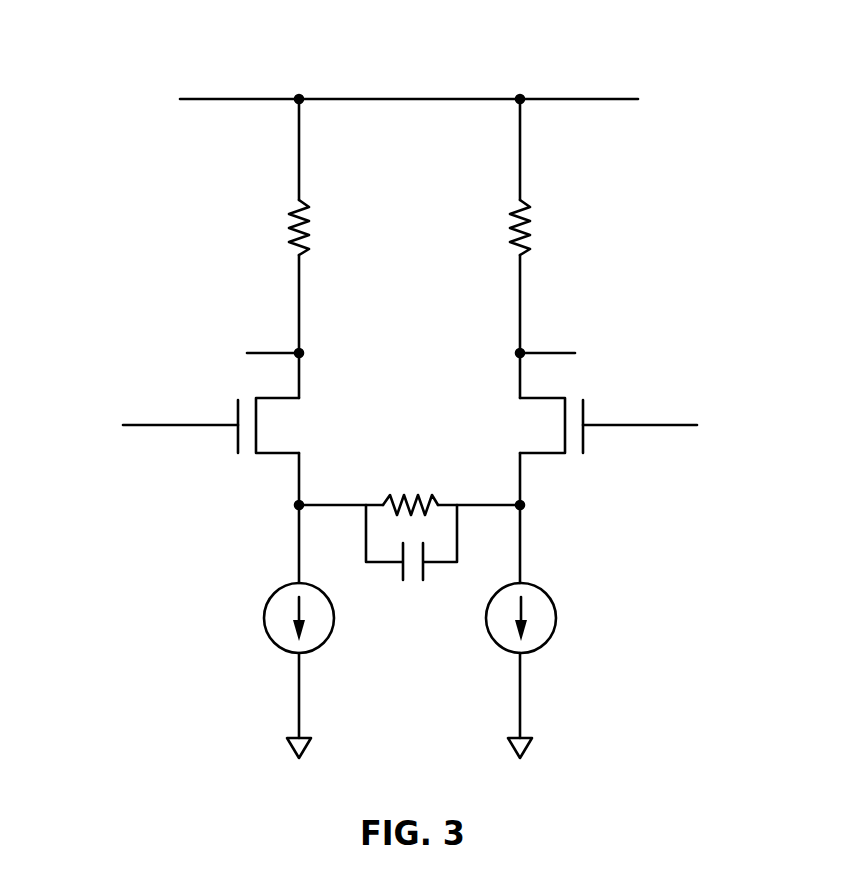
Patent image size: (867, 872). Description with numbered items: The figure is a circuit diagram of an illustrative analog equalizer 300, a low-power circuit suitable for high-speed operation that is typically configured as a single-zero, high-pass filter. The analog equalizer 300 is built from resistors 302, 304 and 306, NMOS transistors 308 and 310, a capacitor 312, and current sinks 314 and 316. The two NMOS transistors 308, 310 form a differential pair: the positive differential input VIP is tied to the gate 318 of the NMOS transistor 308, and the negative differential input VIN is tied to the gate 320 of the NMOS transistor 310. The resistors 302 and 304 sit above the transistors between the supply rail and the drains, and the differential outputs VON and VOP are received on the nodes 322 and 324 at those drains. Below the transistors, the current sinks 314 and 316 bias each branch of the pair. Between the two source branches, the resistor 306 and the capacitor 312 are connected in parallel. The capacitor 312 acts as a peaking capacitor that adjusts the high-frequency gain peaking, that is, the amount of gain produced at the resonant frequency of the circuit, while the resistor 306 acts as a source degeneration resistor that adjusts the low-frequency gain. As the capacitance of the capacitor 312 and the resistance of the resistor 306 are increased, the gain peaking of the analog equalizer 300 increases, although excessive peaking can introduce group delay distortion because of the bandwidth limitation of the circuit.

The analog equalizer 300 is at (230, 58).
The resistor 302 is at (289, 199).
The resistor 304 is at (530, 199).
The resistor 306 is at (415, 492).
The NMOS transistor 308 is at (245, 458).
The NMOS transistor 310 is at (578, 458).
The capacitor 312 is at (410, 577).
The current sink 314 is at (261, 600).
The current sink 316 is at (564, 600).
The gate 318 is at (212, 424).
The gate 320 is at (604, 424).
The node 322 is at (275, 351).
The node 324 is at (550, 351).